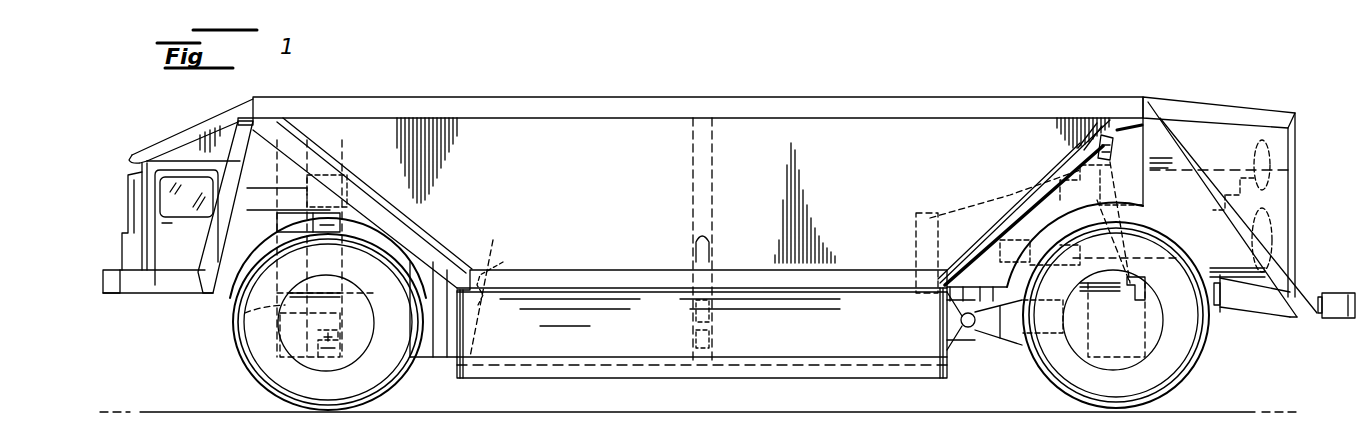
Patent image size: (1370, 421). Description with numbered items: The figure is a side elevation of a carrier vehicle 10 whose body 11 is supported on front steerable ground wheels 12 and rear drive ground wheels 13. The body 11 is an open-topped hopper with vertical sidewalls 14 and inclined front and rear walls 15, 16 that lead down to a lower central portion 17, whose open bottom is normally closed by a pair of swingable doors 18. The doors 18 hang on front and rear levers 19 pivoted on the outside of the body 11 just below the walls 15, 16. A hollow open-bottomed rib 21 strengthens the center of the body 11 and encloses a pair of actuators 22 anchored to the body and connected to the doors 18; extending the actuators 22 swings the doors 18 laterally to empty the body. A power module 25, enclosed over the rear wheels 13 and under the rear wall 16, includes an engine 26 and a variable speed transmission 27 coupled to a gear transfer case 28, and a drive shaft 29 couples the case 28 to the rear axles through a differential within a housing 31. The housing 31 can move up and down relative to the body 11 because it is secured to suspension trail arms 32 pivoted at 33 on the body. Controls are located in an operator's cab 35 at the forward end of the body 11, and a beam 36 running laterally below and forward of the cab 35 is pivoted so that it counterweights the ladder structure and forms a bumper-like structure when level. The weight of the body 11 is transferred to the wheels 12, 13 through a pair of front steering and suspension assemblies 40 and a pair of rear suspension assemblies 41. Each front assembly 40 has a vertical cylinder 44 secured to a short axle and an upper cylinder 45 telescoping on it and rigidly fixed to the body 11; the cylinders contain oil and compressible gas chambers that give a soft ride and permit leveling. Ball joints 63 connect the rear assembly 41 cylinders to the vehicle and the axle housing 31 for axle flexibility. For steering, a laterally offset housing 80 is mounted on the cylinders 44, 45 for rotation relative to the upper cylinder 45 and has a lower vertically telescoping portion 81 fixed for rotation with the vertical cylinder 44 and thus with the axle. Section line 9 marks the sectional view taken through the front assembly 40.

The section line 9- 9 is at (327, 225).
The carrier vehicle 10 is at (1230, 58).
The body 11 is at (764, 95).
The front steerable ground wheels 12 is at (243, 342).
The rear drive ground wheels 13 is at (1203, 360).
The vertical sidewalls 14 is at (568, 142).
The inclined front wall 15 is at (489, 286).
The inclined rear wall 16 is at (918, 263).
The lower central portion 17 is at (503, 262).
The swingable doors 18 is at (631, 370).
The front and rear levers 19 is at (447, 350).
The hollow open-bottomed rib 21 is at (712, 235).
The actuators 22 is at (693, 327).
The power module 25 is at (1233, 165).
The engine 26 is at (1195, 175).
The variable speed transmission 27 is at (1024, 205).
The gear transfer case 28 is at (918, 230).
The drive shaft 29 is at (987, 347).
The housing 31 is at (1102, 357).
The suspension trail arms 32 is at (995, 303).
The pivot 33 is at (967, 330).
The operator's cab 35 is at (165, 260).
The beam 36 is at (104, 270).
The front steering and suspension assemblies 40 is at (352, 220).
The rear suspension assemblies 41 is at (1192, 178).
The vertical cylinders 44 is at (330, 332).
The upper cylinders 45 is at (347, 302).
The ball joints 63 is at (1063, 162).
The laterally offset housing 80 is at (280, 232).
The lower vertically telescoping portion 81 is at (245, 313).